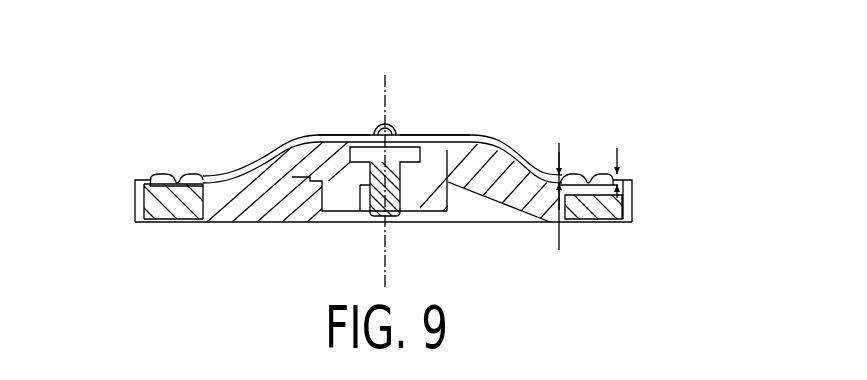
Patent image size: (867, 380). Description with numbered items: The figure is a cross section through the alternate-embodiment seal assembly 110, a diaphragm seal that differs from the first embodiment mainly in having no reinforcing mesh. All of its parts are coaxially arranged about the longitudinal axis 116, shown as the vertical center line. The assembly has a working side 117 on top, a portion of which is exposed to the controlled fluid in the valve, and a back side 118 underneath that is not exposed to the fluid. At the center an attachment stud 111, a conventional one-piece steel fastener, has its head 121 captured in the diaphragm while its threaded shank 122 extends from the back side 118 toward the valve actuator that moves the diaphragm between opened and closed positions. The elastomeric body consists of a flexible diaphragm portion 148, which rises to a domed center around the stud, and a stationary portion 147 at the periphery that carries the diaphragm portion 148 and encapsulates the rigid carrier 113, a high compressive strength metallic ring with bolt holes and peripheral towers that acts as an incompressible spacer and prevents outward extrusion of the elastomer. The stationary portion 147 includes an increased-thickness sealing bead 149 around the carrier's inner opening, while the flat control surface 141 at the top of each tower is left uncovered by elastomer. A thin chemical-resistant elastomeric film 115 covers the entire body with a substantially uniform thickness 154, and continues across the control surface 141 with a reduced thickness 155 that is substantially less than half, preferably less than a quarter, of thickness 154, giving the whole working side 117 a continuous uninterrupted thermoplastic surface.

The seal assembly 110 is at (475, 133).
The attachment stud 111 is at (355, 165).
The rigid carrier 113 is at (175, 216).
The elastomeric film 115 is at (250, 167).
The longitudinal axis 116 is at (384, 252).
The working side 117 is at (521, 148).
The back side 118 is at (504, 223).
The head 121 is at (405, 147).
The threaded shank 122 is at (360, 183).
The control surface 141 is at (138, 179).
The stationary portion 147 is at (600, 182).
The diaphragm portion 148 is at (301, 134).
The sealing bead 149 is at (197, 178).
The film thickness 154 is at (562, 247).
The reduced thickness 155 is at (621, 158).